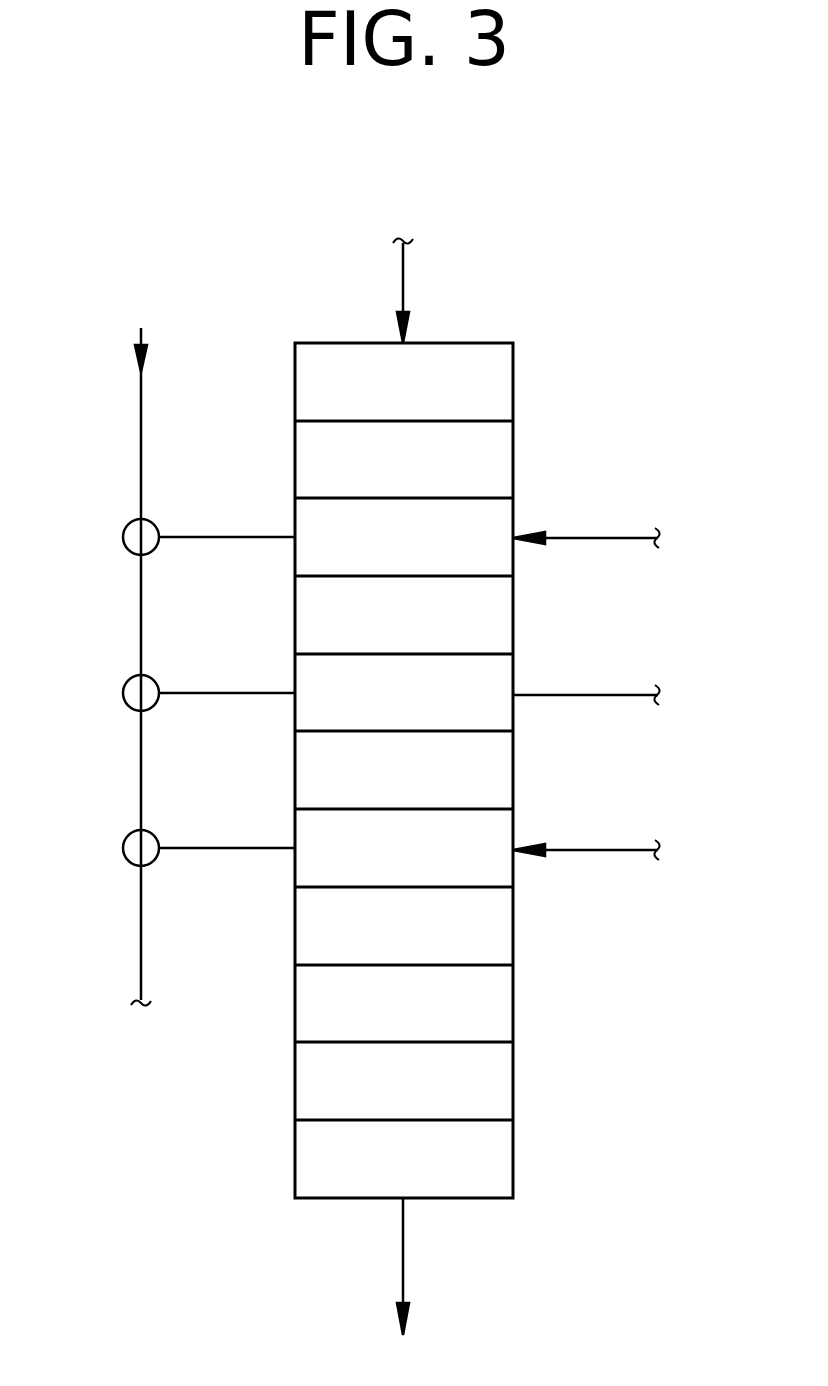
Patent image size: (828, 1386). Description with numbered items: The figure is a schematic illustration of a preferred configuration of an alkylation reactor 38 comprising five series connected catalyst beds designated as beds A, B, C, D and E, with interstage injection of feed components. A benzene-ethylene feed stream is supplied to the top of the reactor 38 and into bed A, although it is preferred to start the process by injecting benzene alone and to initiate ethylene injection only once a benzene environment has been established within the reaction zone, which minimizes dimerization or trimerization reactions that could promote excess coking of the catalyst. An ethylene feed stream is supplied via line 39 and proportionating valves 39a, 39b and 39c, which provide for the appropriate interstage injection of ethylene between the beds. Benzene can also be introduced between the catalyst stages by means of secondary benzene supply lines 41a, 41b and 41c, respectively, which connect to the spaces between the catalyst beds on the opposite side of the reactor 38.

The reactor 38 is at (513, 383).
The line 39 is at (141, 430).
The proportionating valve 39a is at (146, 528).
The proportionating valve 39b is at (146, 684).
The proportionating valve 39c is at (146, 839).
The secondary benzene supply line 41a is at (586, 519).
The secondary benzene supply line 41b is at (586, 675).
The secondary benzene supply line 41c is at (586, 831).